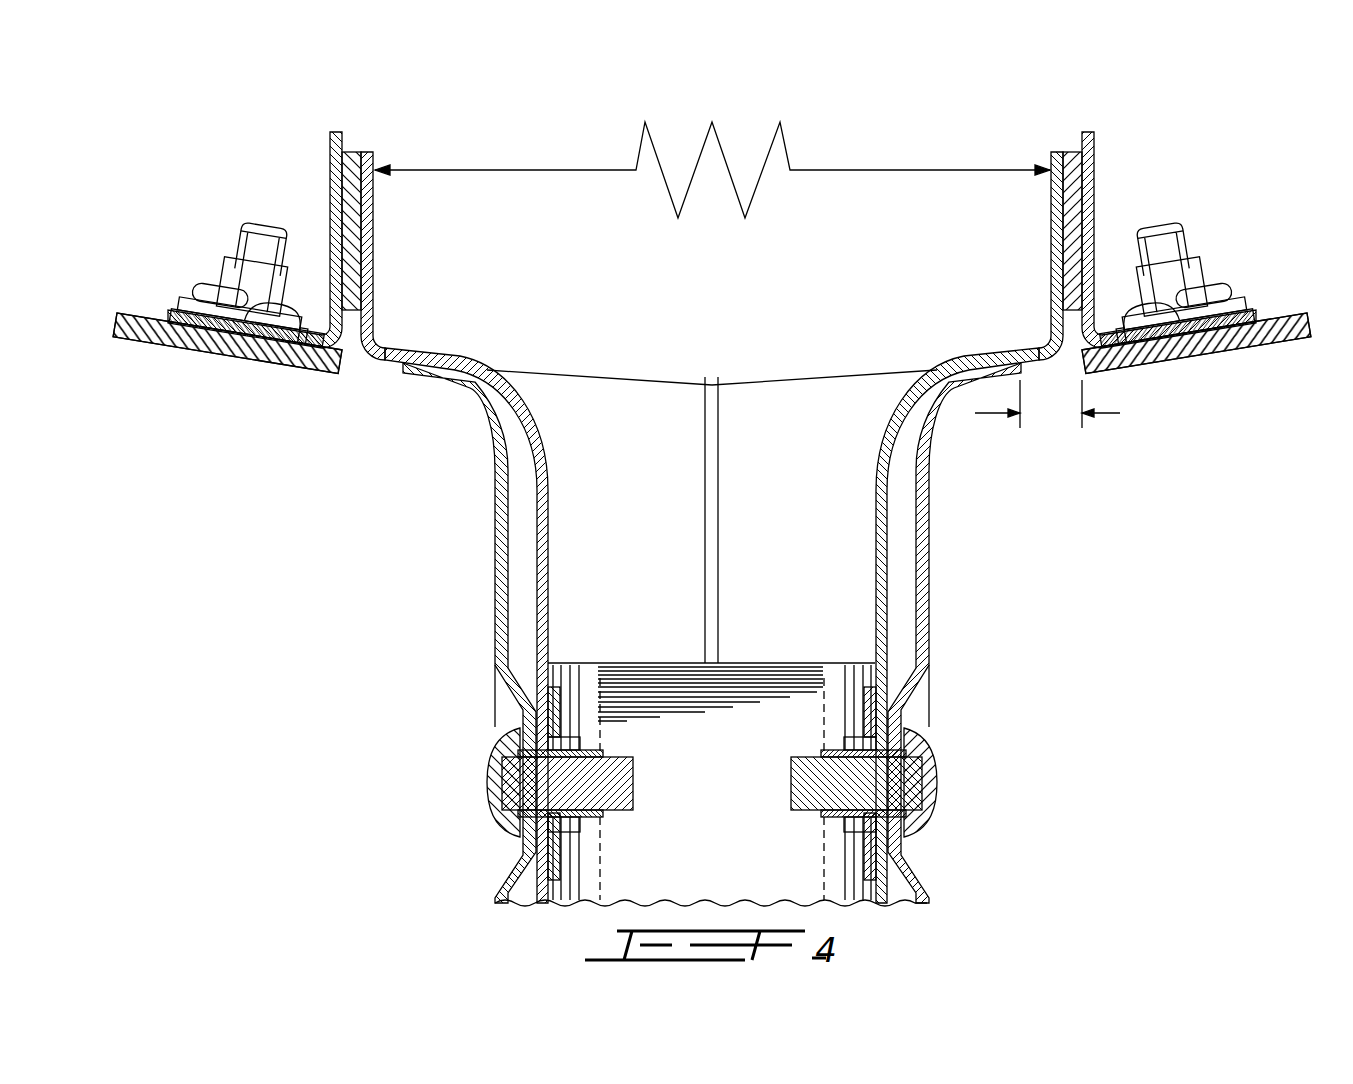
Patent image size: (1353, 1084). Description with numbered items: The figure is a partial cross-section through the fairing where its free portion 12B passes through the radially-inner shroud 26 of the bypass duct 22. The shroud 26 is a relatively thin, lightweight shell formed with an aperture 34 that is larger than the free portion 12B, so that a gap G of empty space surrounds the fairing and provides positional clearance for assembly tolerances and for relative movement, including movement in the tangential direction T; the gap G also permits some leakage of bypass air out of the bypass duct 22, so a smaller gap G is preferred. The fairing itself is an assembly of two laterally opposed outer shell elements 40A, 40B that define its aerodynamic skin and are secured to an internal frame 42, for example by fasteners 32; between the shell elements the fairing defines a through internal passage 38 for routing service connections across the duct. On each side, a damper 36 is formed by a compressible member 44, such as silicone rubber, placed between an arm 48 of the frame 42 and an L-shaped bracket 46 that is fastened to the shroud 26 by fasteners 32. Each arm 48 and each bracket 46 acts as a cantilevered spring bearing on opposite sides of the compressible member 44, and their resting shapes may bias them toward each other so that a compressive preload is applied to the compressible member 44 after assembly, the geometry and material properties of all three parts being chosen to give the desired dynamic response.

The free portion 12B is at (415, 462).
The bypass duct 22 is at (324, 655).
The radially-inner shroud 26 is at (145, 337).
The fasteners 32 is at (235, 257).
The aperture 34 is at (372, 365).
The damper 36 is at (222, 167).
The through internal passage 38 is at (672, 430).
The outer shell element 40A is at (767, 418).
The outer shell element 40B is at (595, 405).
The internal frame 42 is at (699, 753).
The compressible member 44 is at (352, 152).
The bracket 46 is at (330, 147).
The arms 48 is at (375, 220).
The tangential direction T is at (802, 72).
The gap G is at (1050, 420).